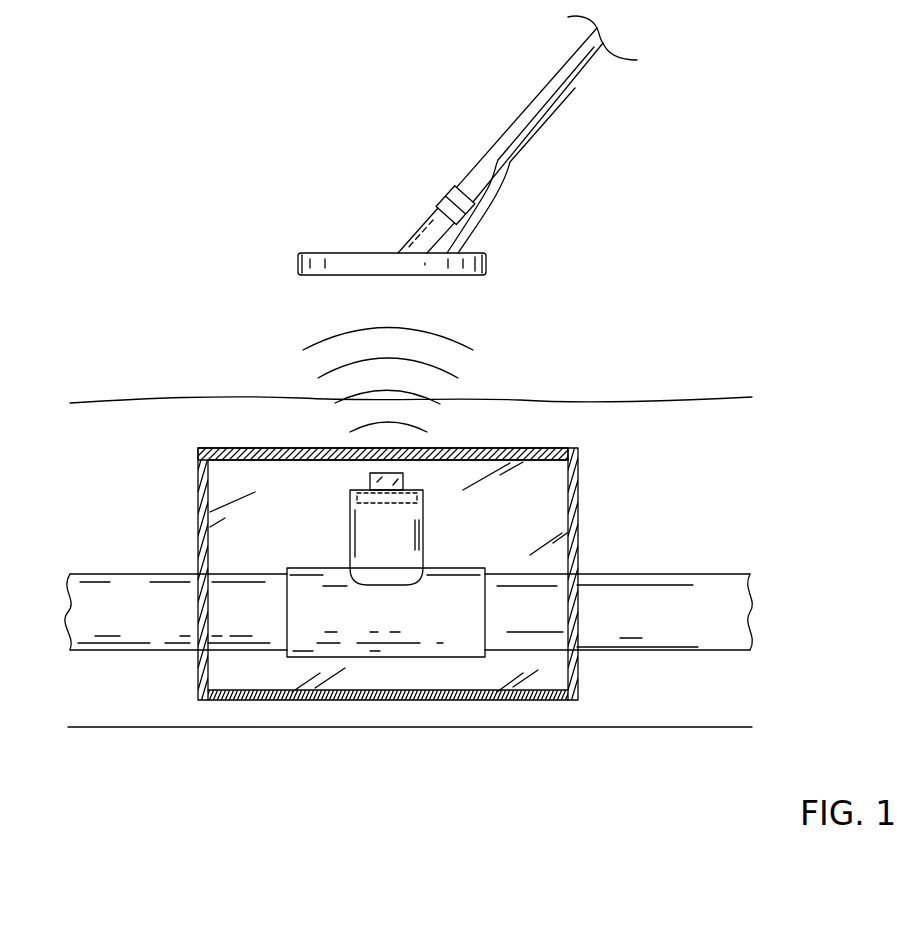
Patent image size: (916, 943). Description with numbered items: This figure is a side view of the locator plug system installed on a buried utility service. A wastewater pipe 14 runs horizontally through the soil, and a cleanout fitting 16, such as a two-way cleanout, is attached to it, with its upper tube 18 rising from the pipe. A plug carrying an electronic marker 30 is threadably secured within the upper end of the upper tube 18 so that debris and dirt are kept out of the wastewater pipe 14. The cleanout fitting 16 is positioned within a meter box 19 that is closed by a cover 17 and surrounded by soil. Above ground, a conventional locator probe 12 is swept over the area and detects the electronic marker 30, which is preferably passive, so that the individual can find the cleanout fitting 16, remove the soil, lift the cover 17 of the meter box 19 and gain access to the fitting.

The locator probe 12 is at (352, 263).
The wastewater pipe 14 is at (733, 632).
The cleanout fitting 16 is at (300, 630).
The cover 17 is at (233, 453).
The upper tube 18 is at (372, 545).
The meter box 19 is at (577, 493).
The electronic marker 30 is at (418, 502).